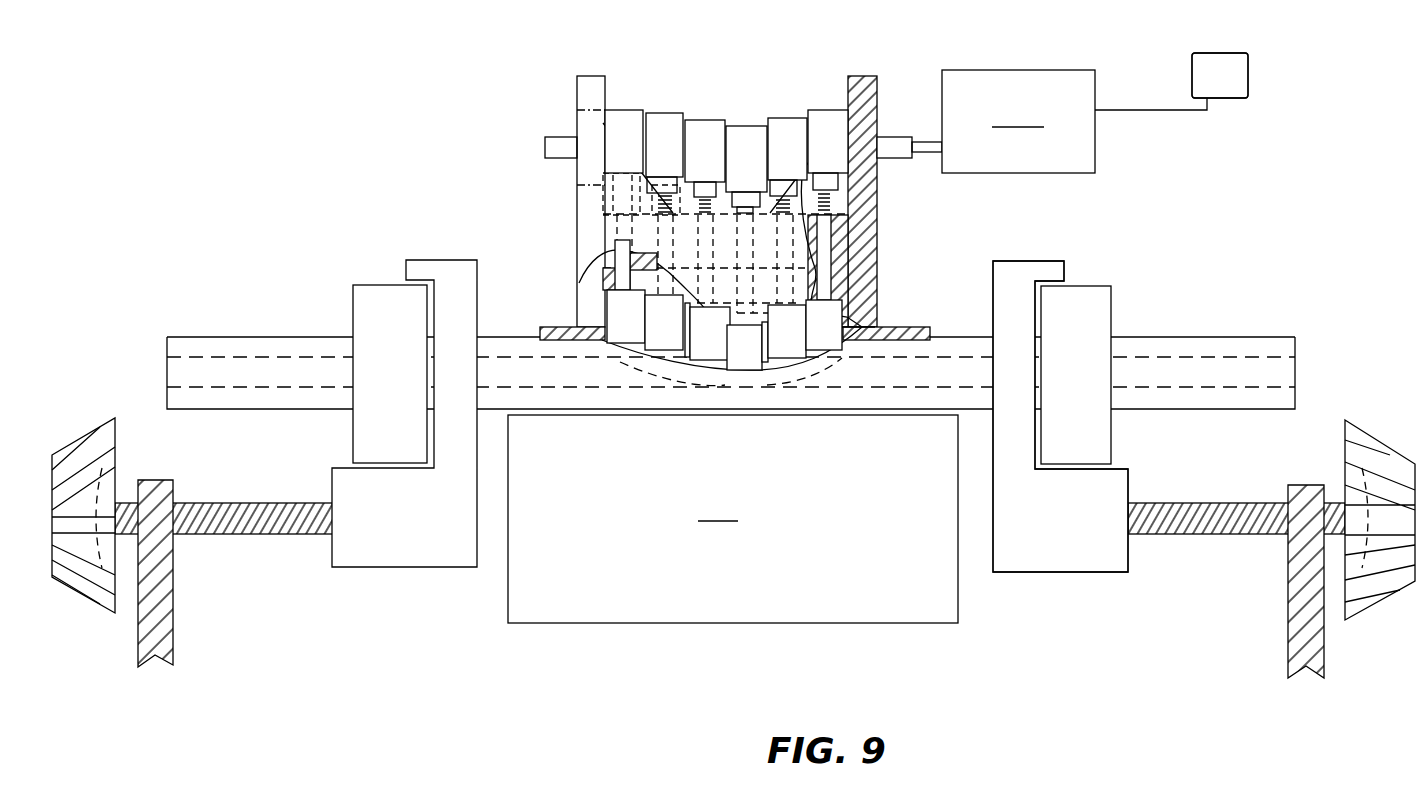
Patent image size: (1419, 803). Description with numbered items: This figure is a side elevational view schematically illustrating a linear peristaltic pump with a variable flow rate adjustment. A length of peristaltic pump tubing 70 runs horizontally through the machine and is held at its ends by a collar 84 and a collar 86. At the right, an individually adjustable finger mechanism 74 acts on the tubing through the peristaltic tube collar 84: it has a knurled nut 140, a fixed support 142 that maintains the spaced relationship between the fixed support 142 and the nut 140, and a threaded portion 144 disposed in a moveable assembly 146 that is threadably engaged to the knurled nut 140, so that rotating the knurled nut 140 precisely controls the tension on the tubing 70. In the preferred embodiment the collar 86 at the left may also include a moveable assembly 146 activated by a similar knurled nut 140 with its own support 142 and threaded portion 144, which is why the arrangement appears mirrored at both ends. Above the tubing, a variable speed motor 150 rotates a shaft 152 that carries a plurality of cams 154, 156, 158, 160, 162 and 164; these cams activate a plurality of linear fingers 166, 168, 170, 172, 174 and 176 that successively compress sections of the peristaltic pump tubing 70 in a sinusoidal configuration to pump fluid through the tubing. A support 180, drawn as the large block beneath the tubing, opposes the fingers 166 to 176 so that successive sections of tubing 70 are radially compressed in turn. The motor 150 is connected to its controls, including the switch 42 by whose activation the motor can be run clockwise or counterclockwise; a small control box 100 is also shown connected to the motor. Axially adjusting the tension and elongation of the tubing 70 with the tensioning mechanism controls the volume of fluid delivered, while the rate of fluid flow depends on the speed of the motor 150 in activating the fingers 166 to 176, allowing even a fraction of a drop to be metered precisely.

The switch 42 is at (1244, 53).
The peristaltic pump tubing 70 is at (1200, 340).
The individually adjustable finger mechanism 74 is at (1058, 573).
The collar 84 is at (1105, 290).
The collar 86 is at (372, 293).
The control unit 100 is at (1220, 75).
The knurled nut 140 is at (60, 452).
The fixed support 142 is at (158, 660).
The threaded portion 144 is at (268, 534).
The moveable assembly 146 is at (440, 268).
The variable speed motor 150 is at (1018, 121).
The shaft 152 is at (890, 133).
The cam 154 is at (827, 113).
The cam 156 is at (783, 127).
The cam 158 is at (742, 133).
The cam 160 is at (698, 127).
The cam 162 is at (668, 122).
The cam 164 is at (628, 117).
The linear finger 166 is at (823, 342).
The linear finger 168 is at (778, 347).
The linear finger 170 is at (742, 348).
The linear finger 172 is at (703, 350).
The linear finger 174 is at (655, 322).
The linear finger 176 is at (617, 328).
The support 180 is at (733, 519).